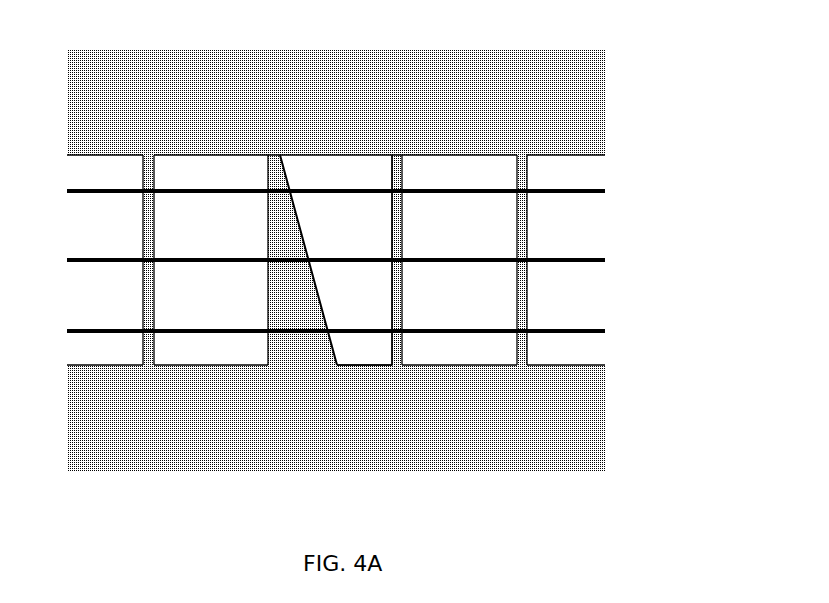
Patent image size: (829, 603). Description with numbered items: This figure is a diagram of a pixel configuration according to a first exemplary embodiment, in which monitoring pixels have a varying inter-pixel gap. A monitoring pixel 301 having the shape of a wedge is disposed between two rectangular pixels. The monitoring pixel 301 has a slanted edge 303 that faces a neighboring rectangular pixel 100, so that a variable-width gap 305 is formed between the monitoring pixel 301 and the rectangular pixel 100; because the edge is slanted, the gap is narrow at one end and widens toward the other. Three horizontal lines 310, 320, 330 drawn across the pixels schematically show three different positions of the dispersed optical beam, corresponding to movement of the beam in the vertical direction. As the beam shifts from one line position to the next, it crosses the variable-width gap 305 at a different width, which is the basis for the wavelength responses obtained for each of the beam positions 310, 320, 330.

The rectangular pixel 100 is at (252, 155).
The monitoring pixel 301 is at (307, 155).
The slanted edge 303 is at (302, 240).
The variable-width gap 305 is at (285, 305).
The line 310 is at (603, 191).
The line 320 is at (586, 260).
The line 330 is at (583, 331).